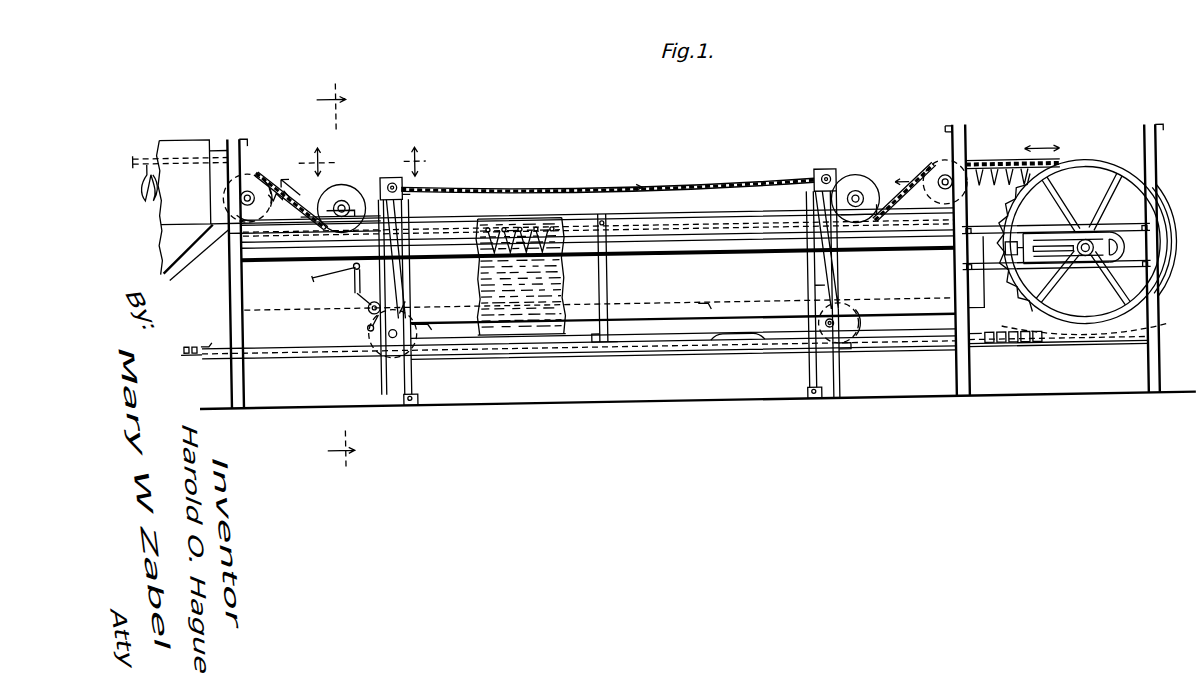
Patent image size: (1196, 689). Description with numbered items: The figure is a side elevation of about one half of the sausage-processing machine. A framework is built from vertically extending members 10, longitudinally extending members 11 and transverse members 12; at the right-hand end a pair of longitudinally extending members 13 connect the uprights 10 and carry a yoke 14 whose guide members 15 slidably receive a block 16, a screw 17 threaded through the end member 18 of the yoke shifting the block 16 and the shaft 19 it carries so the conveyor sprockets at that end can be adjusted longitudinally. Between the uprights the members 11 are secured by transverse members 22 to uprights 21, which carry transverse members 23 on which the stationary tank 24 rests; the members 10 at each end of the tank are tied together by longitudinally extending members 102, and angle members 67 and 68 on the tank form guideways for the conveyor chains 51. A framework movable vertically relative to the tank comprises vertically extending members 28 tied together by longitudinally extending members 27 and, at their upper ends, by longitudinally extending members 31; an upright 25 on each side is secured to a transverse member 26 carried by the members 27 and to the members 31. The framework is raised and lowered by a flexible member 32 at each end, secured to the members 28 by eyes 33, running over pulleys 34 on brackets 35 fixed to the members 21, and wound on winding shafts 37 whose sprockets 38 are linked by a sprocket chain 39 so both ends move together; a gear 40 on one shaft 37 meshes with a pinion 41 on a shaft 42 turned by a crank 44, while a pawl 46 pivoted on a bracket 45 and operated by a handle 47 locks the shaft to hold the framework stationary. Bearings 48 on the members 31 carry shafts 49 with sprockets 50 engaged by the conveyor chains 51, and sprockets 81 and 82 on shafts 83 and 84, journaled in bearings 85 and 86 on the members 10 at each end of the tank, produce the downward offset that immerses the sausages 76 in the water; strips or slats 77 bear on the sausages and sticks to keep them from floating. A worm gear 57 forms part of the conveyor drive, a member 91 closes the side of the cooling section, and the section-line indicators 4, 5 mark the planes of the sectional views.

The vertically extending members 10 is at (1161, 181).
The longitudinally extending members 11 is at (735, 352).
The transverse members 12 is at (249, 139).
The longitudinally extending members 13 is at (997, 240).
The yoke 14 is at (1113, 282).
The guide members 15 is at (1066, 250).
The block 16 is at (1117, 251).
The screw 17 is at (1017, 255).
The end member 18 is at (1040, 280).
The shaft 19 is at (1090, 255).
The uprights 21 is at (399, 383).
The transverse members 22 is at (853, 360).
The transverse members 23 is at (433, 334).
The tank 24 is at (704, 318).
The upright 25 is at (610, 288).
The transverse member 26 is at (612, 344).
The longitudinally extending members 27 is at (561, 347).
The vertically extending members 28 is at (408, 289).
The longitudinally extending members 31 is at (668, 219).
The flexible member 32 is at (408, 202).
The eyes 33 is at (410, 406).
The pulleys 34 is at (402, 181).
The brackets 35 is at (390, 180).
The winding shafts 37 is at (827, 335).
The sprockets 38 is at (859, 320).
The sprocket chain 39 is at (701, 311).
The gear 40 is at (380, 358).
The pinion 41 is at (370, 313).
The shaft 42 is at (411, 306).
The crank 44 is at (369, 332).
The bracket 45 is at (357, 286).
The pawl 46 is at (368, 301).
The handle 47 is at (316, 283).
The bearings 48 is at (366, 214).
The shafts 49 is at (347, 206).
The sprockets 50 is at (343, 205).
The conveyor chains 51 is at (148, 173).
The worm gear 57 is at (196, 357).
The angle member 67 is at (230, 263).
The angle members 68 is at (225, 233).
The sausages 76 is at (146, 196).
The strips or slats 77 is at (456, 193).
The sprocket 81 is at (949, 185).
The sprocket 82 is at (262, 186).
The shaft 83 is at (966, 136).
The shaft 84 is at (258, 182).
The bearing 85 is at (953, 222).
The bearing 86 is at (251, 191).
The member 91 is at (183, 208).
The longitudinally extending members 102 is at (283, 252).
The section line 4 is at (345, 276).
The section line 5 is at (369, 162).